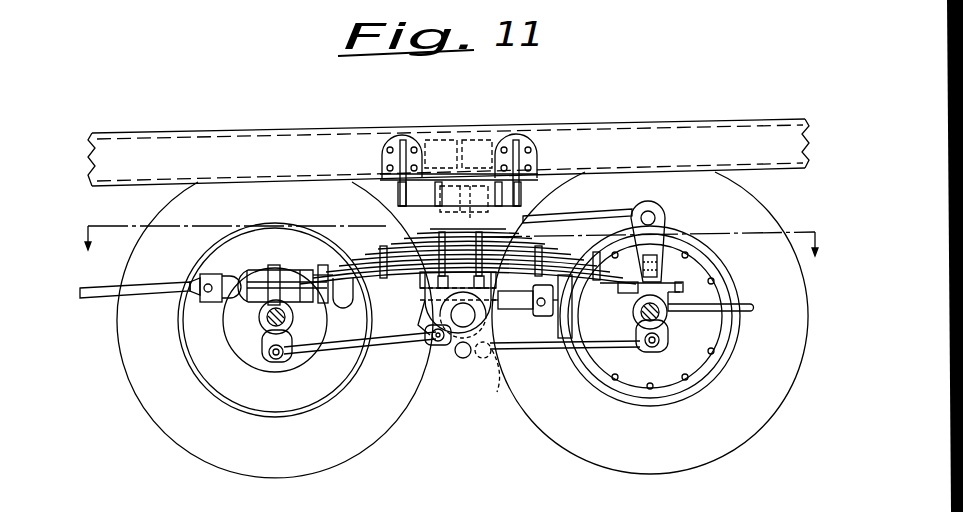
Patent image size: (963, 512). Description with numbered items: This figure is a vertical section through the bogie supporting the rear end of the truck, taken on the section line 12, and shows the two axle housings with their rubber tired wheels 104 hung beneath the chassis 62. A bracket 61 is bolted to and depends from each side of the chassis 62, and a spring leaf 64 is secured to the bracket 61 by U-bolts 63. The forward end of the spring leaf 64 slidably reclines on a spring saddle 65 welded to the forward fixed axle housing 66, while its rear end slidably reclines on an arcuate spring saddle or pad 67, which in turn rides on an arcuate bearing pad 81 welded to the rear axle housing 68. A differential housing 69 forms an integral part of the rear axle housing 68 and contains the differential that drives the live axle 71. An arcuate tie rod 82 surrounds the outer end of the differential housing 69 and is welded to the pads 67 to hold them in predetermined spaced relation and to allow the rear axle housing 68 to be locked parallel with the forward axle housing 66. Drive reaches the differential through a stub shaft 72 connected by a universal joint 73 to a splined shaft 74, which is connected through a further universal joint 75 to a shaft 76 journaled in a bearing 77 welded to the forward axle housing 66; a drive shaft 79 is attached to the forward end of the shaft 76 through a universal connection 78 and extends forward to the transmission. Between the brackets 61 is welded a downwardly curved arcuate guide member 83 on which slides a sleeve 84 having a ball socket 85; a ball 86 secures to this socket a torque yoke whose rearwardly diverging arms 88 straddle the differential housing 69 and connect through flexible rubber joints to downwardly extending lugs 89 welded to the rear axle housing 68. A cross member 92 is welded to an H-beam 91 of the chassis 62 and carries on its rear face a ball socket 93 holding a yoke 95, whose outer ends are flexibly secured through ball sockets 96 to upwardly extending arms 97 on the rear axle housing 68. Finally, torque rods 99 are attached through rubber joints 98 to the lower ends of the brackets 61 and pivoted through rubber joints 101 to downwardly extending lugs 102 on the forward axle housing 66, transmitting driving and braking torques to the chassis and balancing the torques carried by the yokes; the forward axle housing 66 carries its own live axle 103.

The section line 12— 12 is at (455, 253).
The bracket 61 is at (394, 197).
The chassis 62 is at (585, 134).
The U-bolts 63 is at (435, 228).
The spring leaf 64 is at (375, 251).
The spring saddle 65 is at (257, 305).
The forward fixed axle housing 66 is at (293, 318).
The arcuate spring saddle or pad 67 is at (683, 287).
The rear axle housing 68 is at (637, 313).
The differential housing 69 is at (697, 362).
The live axle 71 is at (641, 306).
The stub shaft 72 is at (556, 315).
The universal joint 73 is at (527, 310).
The splined shaft 74 is at (430, 296).
The universal joint 75 is at (335, 302).
The shaft 76 is at (242, 277).
The bearing 77 is at (250, 270).
The universal connection 78 is at (208, 303).
The drive shaft 79 is at (142, 293).
The arcuate bearing pad 81 is at (618, 289).
The arcuate tie rod 82 is at (735, 305).
The arcuate guide member 83 is at (460, 338).
The sleeve 84 is at (462, 359).
The ball socket 85 is at (483, 359).
The ball 86 is at (496, 379).
The rearwardly diverging arms 88 is at (537, 351).
The downwardly extending lug 89 is at (664, 335).
The H-beam 91 is at (486, 128).
The cross member 92 is at (456, 176).
The ball socket 93 is at (476, 180).
The yoke 95 is at (578, 212).
The ball socket 96 is at (652, 209).
The upwardly extending arm 97 is at (670, 231).
The rubber joint 98 is at (436, 343).
The torque rod 99 is at (372, 342).
The rubber joint 101 is at (281, 360).
The downwardly extending lug 102 is at (268, 343).
The live axle 103 is at (290, 326).
The rubber tired wheel 104 is at (766, 405).